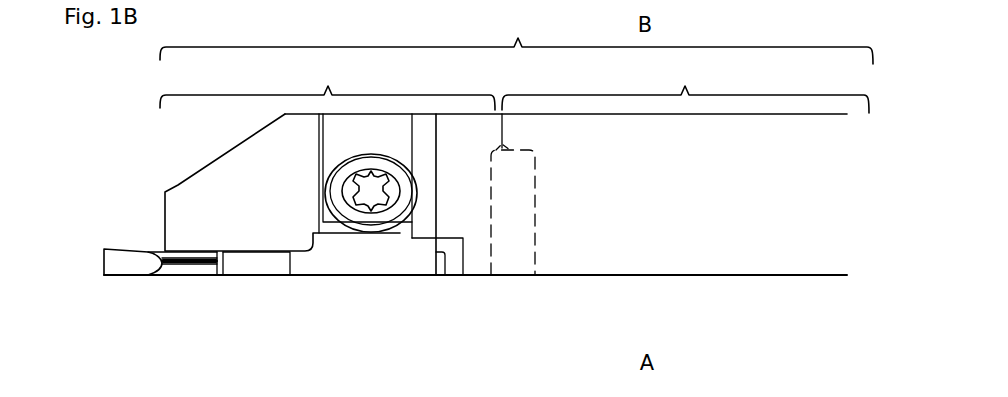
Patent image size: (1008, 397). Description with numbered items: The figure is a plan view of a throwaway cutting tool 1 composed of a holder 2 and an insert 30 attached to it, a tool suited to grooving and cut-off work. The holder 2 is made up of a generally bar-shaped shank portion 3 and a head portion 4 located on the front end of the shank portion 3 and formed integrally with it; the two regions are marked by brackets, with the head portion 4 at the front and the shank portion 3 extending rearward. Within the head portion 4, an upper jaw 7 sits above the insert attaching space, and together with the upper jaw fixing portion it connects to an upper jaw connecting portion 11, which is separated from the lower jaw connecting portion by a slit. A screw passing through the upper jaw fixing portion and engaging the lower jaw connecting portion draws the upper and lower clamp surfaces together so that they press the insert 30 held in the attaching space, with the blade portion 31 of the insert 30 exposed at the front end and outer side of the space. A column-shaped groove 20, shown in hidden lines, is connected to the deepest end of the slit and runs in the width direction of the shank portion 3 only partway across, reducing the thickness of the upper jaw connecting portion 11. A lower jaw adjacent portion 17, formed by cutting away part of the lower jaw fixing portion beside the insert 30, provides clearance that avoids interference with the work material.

The cutting tool 1 is at (768, 298).
The holder 2 is at (516, 37).
The shank portion 3 is at (685, 87).
The head portion 4 is at (327, 85).
The upper jaw 7 is at (257, 262).
The upper jaw connecting portion 11 is at (473, 265).
The lower jaw adjacent portion 17 is at (207, 195).
The column-shaped groove 20 is at (518, 248).
The insert 30 is at (143, 262).
The blade portion 31 is at (115, 262).